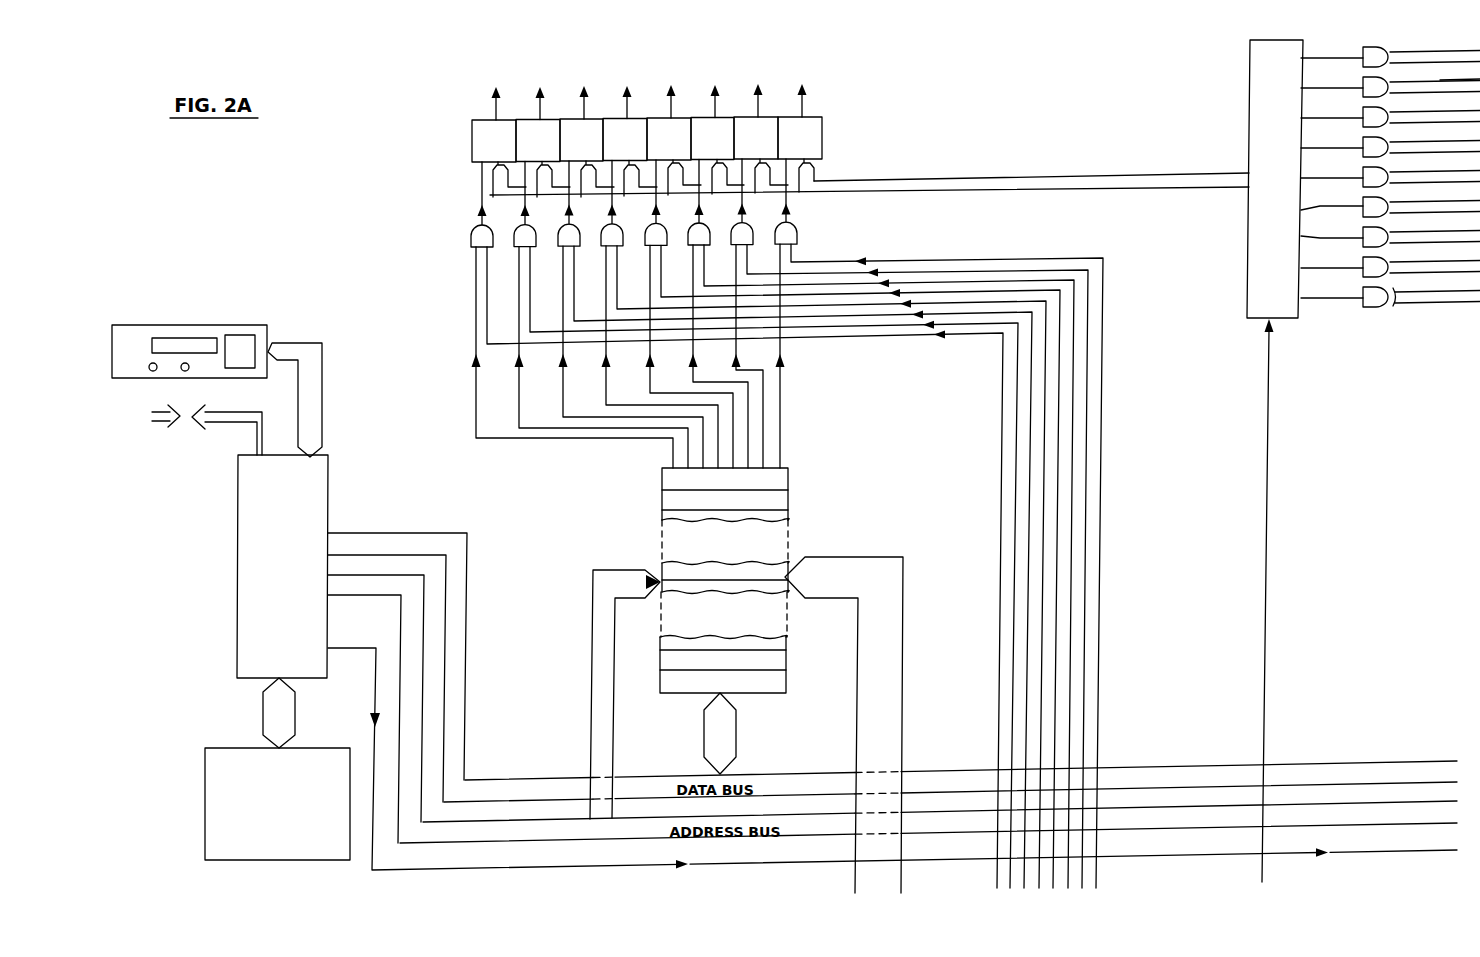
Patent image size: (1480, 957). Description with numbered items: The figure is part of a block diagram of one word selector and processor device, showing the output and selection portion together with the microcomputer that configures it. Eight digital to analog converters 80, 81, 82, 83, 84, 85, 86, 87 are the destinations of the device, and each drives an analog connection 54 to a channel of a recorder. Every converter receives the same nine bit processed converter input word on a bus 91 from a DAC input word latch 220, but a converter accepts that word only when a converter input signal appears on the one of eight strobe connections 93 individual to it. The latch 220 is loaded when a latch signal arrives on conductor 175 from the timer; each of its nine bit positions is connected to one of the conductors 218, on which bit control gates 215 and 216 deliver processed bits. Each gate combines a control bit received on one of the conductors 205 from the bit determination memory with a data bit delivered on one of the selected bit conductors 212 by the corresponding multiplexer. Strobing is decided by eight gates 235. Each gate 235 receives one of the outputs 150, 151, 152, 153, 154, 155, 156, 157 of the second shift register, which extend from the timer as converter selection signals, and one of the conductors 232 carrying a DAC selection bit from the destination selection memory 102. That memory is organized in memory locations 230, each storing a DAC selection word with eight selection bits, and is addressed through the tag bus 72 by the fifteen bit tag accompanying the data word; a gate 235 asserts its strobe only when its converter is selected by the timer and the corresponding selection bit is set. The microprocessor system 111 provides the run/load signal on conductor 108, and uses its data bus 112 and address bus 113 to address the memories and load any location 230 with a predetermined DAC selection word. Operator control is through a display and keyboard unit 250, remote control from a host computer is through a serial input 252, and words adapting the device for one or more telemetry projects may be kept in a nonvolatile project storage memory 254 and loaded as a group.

The analog connection 54 is at (752, 78).
The digital to analog converter 80 is at (797, 116).
The digital to analog converter 81 is at (752, 116).
The digital to analog converter 82 is at (708, 117).
The digital to analog converter 83 is at (666, 117).
The digital to analog converter 84 is at (622, 117).
The digital to analog converter 85 is at (577, 118).
The digital to analog converter 86 is at (532, 118).
The digital to analog converter 87 is at (480, 117).
The bus 91 is at (956, 178).
The strobe connections 93 is at (490, 197).
The destination selection memory 102 is at (771, 561).
The conductor 108 is at (374, 690).
The microprocessor system 111 is at (228, 584).
The data bus 112 is at (724, 730).
The address bus 113 is at (641, 578).
The output connection 150 is at (1101, 474).
The output connection 151 is at (1086, 499).
The output connection 152 is at (1071, 524).
The output connection 153 is at (1057, 551).
The output connection 154 is at (1043, 574).
The output connection 155 is at (1029, 597).
The output connection 156 is at (1015, 618).
The output connection 157 is at (1000, 640).
The conductor 175 is at (1272, 465).
The conductors 205 is at (1396, 120).
The selected bit conductors 212 is at (1455, 95).
The bit control gate 215 is at (1362, 307).
The bit control gates 216 is at (1360, 115).
The conductors 218 is at (1300, 248).
The DAC input word latch 220 is at (1249, 108).
The memory locations 230 is at (788, 563).
The conductors 232 is at (563, 430).
The gates 235 is at (520, 247).
The display and keyboard unit 250 is at (197, 325).
The serial input 252 is at (154, 428).
The project storage memory 254 is at (205, 806).
The bus 72 is at (890, 643).